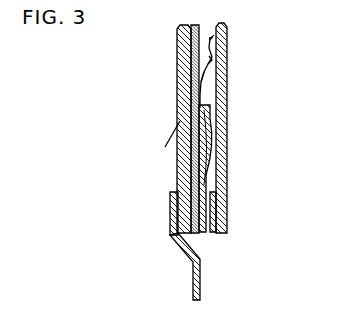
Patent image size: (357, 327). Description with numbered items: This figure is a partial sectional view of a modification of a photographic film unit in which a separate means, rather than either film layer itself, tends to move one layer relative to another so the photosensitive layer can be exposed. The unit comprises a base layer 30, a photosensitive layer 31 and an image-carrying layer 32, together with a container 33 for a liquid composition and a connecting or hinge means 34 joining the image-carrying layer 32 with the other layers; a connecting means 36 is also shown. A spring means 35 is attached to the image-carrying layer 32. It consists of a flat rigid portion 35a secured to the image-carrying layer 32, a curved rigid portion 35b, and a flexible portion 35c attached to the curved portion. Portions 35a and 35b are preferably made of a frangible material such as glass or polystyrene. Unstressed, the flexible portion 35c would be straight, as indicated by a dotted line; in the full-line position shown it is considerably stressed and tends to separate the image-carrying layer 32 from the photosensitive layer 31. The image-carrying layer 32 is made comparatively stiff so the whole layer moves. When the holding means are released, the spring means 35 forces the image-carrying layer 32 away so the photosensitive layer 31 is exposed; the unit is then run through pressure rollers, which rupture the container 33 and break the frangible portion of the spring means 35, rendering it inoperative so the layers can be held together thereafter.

The base layer 30 is at (178, 88).
The photosensitive layer 31 is at (193, 63).
The image-carrying layer 32 is at (227, 77).
The container 33 is at (200, 113).
The connecting or hinge means 34 is at (207, 235).
The spring means 35 is at (202, 47).
The flat rigid portion 35a is at (210, 36).
The curved rigid portion 35b is at (213, 60).
The flexible portion 35c is at (205, 78).
The connecting means 36 is at (193, 268).